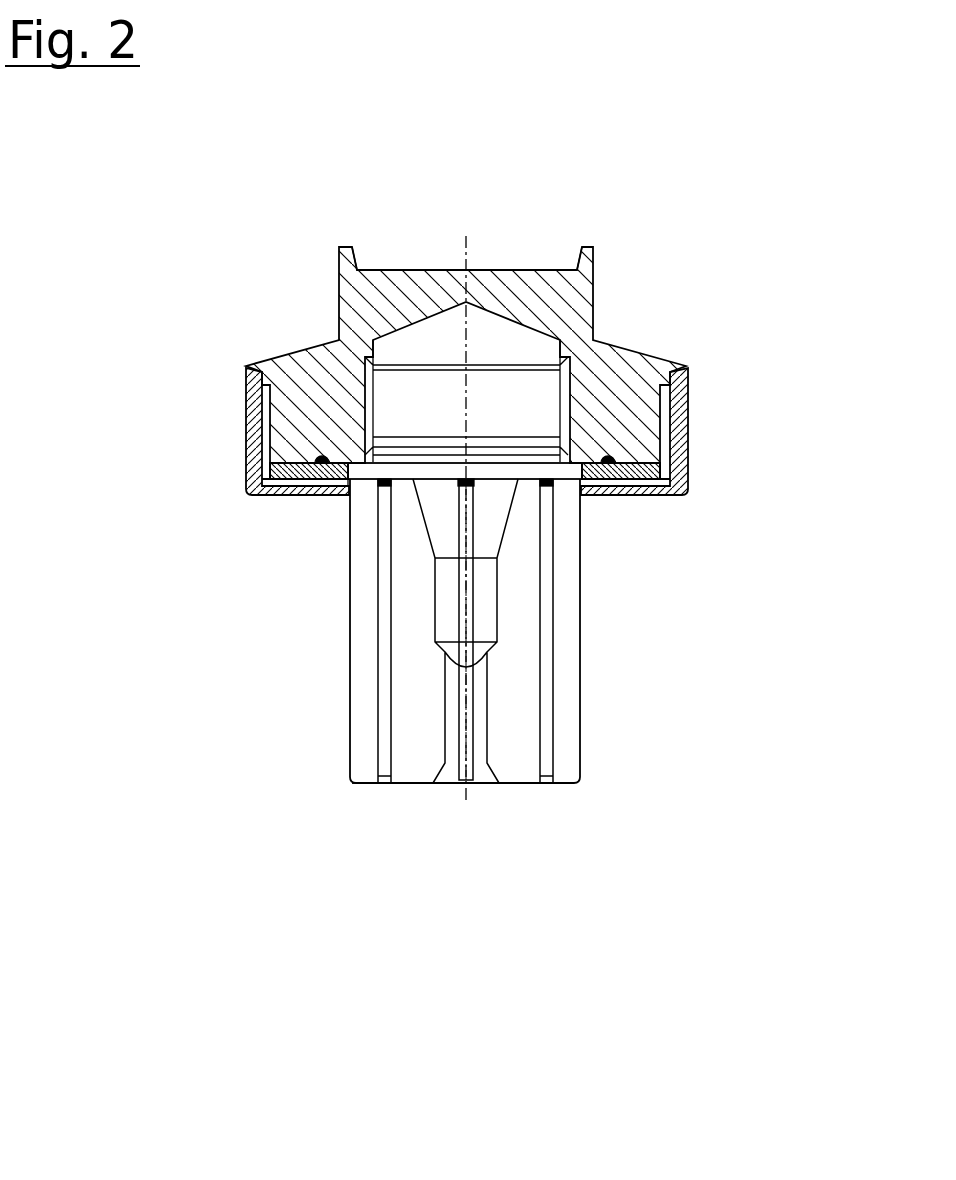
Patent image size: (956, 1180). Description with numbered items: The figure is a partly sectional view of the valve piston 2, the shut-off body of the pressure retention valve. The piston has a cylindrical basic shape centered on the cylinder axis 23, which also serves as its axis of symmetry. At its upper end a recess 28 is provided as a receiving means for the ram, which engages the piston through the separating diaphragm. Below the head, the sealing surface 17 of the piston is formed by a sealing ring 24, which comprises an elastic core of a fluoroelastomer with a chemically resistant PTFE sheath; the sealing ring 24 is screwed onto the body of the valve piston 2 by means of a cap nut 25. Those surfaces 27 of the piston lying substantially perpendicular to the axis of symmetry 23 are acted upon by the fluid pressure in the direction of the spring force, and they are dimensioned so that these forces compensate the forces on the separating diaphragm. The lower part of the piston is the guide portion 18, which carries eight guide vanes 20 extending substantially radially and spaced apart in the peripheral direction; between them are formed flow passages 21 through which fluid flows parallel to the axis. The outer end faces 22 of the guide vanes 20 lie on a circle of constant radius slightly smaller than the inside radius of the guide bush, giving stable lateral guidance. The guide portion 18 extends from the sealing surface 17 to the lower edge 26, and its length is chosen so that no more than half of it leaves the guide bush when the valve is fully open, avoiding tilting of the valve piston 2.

The valve piston 2 is at (682, 208).
The sealing surface 17 is at (605, 483).
The guide portion 18 is at (643, 633).
The guide vanes 20 is at (568, 745).
The flow passages 21 is at (494, 722).
The outer end faces 22 is at (380, 665).
The cylinder axis 23 is at (470, 240).
The sealing ring 24 is at (641, 462).
The cap nut 25 is at (678, 440).
The lower edge 26 is at (361, 786).
The surfaces of the valve piston 27 is at (282, 350).
The recess 28 is at (393, 258).